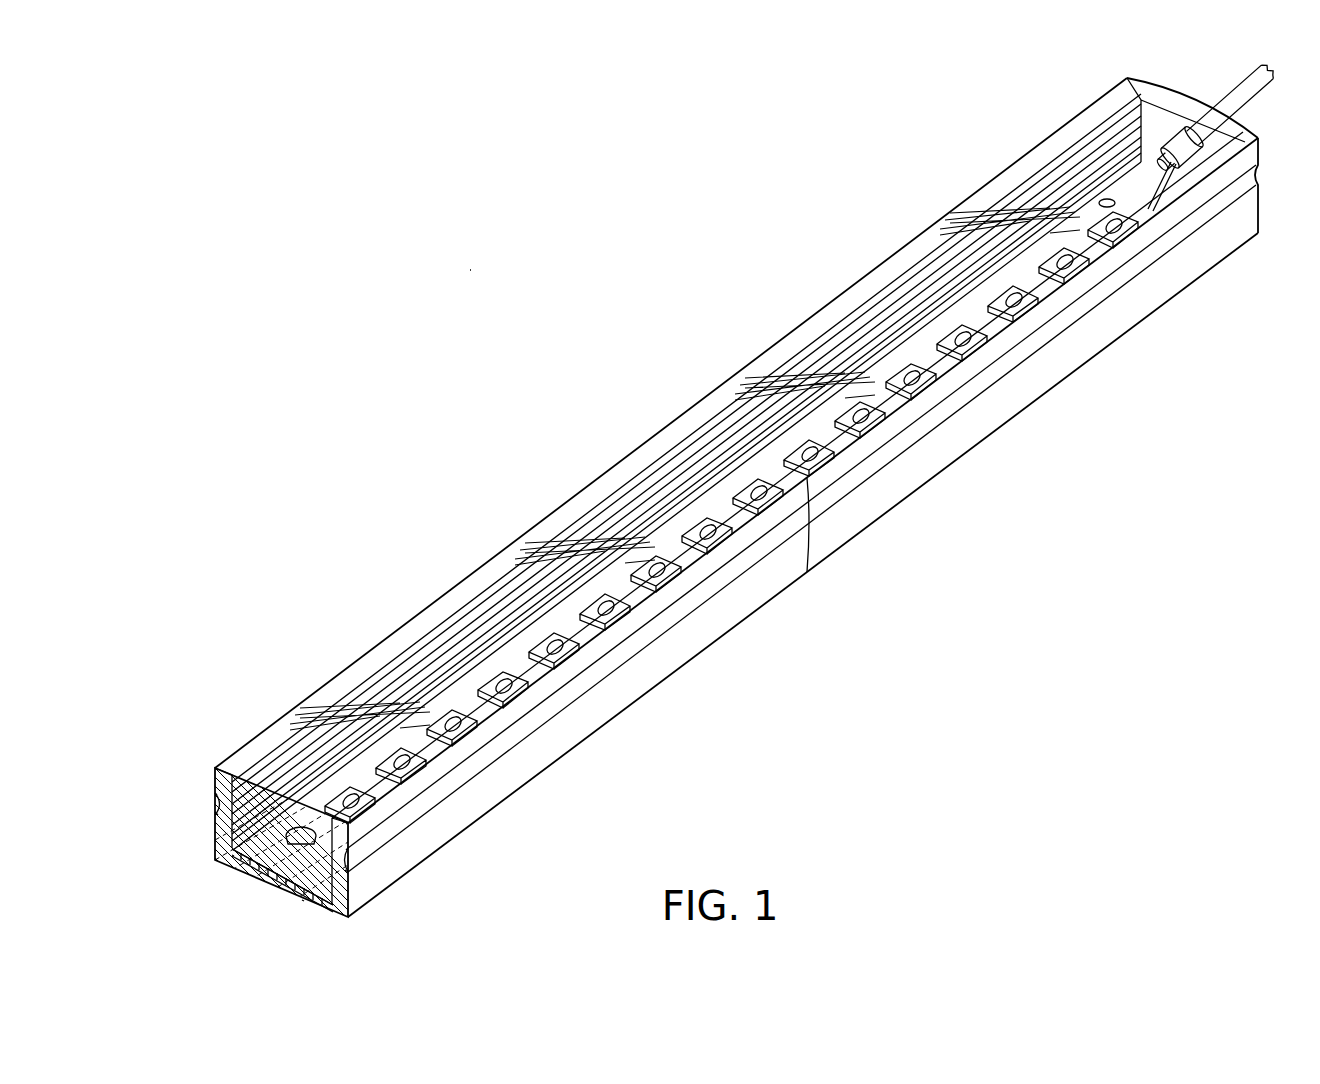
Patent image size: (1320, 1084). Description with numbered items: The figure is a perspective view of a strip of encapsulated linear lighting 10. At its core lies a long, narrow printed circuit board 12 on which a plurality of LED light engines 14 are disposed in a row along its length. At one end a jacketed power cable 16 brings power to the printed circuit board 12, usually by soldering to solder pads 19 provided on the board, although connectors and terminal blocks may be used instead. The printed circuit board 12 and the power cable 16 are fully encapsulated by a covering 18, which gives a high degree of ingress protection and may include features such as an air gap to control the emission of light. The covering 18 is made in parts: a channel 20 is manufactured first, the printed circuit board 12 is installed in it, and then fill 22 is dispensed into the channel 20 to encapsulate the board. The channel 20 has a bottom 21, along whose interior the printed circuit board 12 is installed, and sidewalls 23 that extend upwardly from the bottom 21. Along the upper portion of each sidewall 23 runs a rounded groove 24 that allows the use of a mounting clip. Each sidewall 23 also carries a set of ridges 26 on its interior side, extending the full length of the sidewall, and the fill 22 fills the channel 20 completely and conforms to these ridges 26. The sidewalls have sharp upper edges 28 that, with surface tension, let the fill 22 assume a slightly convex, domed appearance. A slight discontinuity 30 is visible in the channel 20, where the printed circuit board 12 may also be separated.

The strip of encapsulated linear lighting 10 is at (458, 258).
The printed circuit board 12 is at (652, 540).
The LED light engines 14 is at (756, 485).
The power cable 16 is at (1242, 117).
The covering 18 is at (460, 575).
The solder pads 19 is at (1105, 198).
The channel 20 is at (497, 794).
The bottom 21 is at (287, 890).
The fill 22 is at (400, 640).
The sidewalls 23 is at (213, 820).
The rounded groove 24 is at (213, 793).
The ridges 26 is at (232, 855).
The sharp upper edges 28 is at (214, 769).
The discontinuity 30 is at (810, 536).